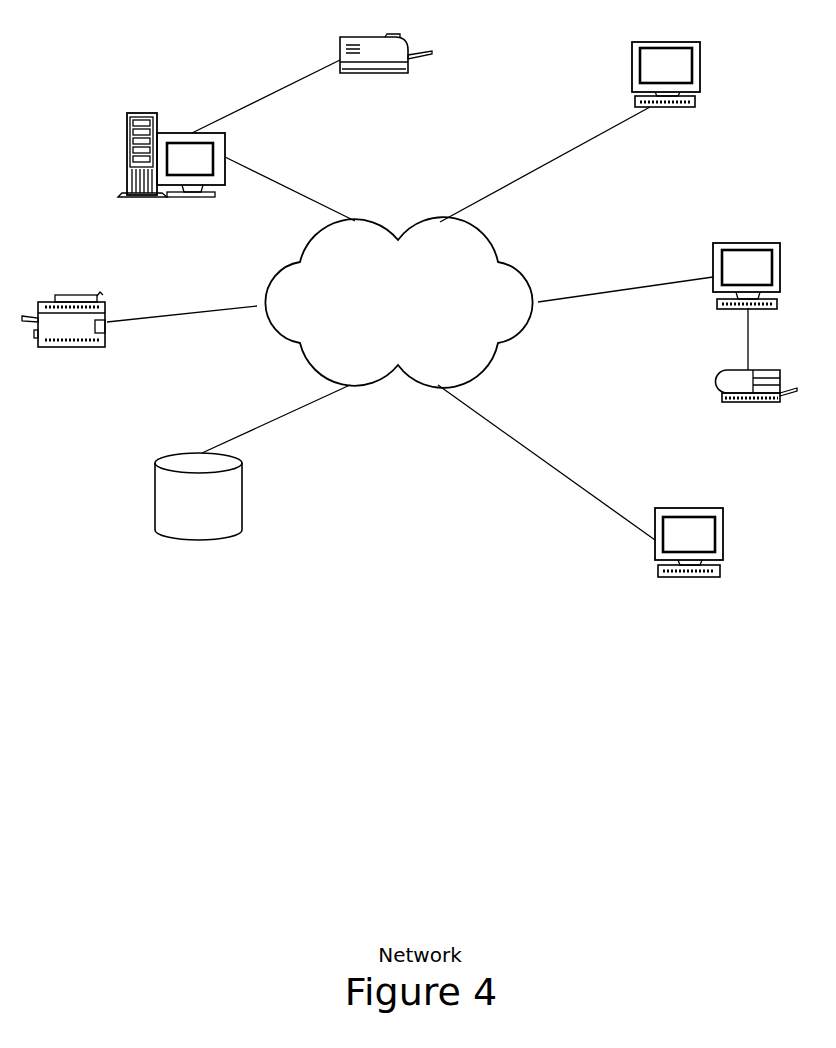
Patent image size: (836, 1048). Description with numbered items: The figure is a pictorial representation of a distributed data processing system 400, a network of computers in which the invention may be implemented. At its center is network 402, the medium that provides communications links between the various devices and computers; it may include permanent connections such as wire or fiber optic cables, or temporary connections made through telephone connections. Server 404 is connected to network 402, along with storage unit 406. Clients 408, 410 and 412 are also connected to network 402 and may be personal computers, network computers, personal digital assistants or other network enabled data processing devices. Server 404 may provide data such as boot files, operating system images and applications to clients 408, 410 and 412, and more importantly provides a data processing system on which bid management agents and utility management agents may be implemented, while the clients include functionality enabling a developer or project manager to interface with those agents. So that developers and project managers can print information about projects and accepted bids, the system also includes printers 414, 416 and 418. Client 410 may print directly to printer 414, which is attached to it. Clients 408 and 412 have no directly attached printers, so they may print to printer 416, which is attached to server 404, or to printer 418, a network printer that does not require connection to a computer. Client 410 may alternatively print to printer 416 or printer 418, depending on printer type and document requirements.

The distributed data processing system 400 is at (409, 469).
The network 402 is at (381, 311).
The server 404 is at (153, 224).
The storage unit 406 is at (178, 576).
The client 408 is at (650, 31).
The client 410 is at (730, 228).
The client 412 is at (670, 496).
The printer 414 is at (730, 430).
The printer 416 is at (356, 100).
The printer 418 is at (55, 373).